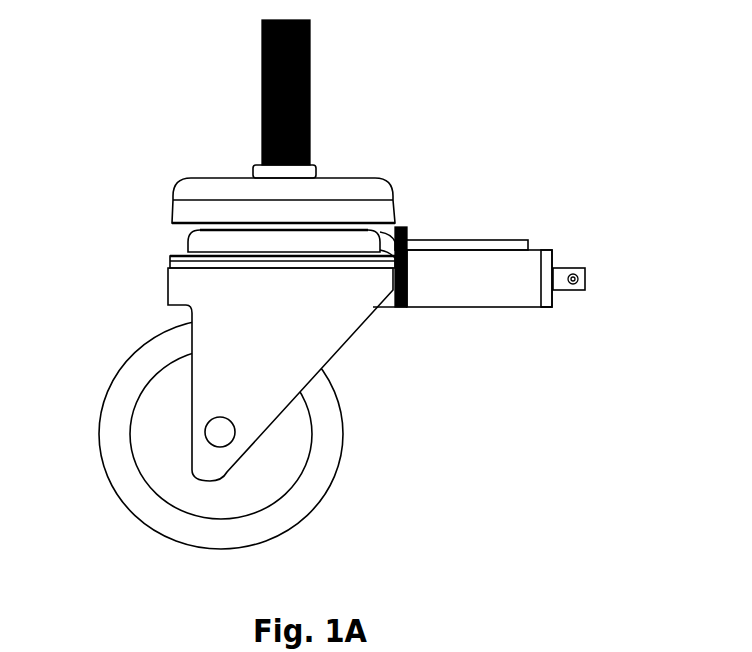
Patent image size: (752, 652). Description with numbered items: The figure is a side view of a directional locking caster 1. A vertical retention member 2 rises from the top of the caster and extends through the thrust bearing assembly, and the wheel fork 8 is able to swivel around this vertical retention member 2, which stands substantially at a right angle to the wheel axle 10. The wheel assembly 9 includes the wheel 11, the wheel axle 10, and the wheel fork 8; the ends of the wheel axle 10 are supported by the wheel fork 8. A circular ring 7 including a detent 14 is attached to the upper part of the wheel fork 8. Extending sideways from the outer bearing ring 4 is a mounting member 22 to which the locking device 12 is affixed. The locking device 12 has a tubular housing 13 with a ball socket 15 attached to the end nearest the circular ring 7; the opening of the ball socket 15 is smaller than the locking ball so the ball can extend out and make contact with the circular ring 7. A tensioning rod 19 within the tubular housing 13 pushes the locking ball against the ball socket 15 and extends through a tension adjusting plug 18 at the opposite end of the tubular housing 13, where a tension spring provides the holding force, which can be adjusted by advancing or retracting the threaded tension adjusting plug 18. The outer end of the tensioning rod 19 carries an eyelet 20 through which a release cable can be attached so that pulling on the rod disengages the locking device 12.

The directional locking caster 1 is at (347, 284).
The vertical retention member 2 is at (310, 67).
The outer bearing ring 4 is at (353, 187).
The circular ring 7 is at (167, 280).
The wheel fork 8 is at (273, 378).
The wheel assembly 9 is at (215, 416).
The wheel axle 10 is at (213, 435).
The wheel 11 is at (280, 473).
The locking device 12 is at (517, 324).
The tubular housing 13 is at (478, 273).
The detent 14 is at (373, 308).
The ball socket 15 is at (410, 285).
The tension adjusting plug 18 is at (547, 313).
The tensioning rod 19 is at (562, 272).
The eyelet 20 is at (587, 277).
The mounting member 22 is at (442, 240).